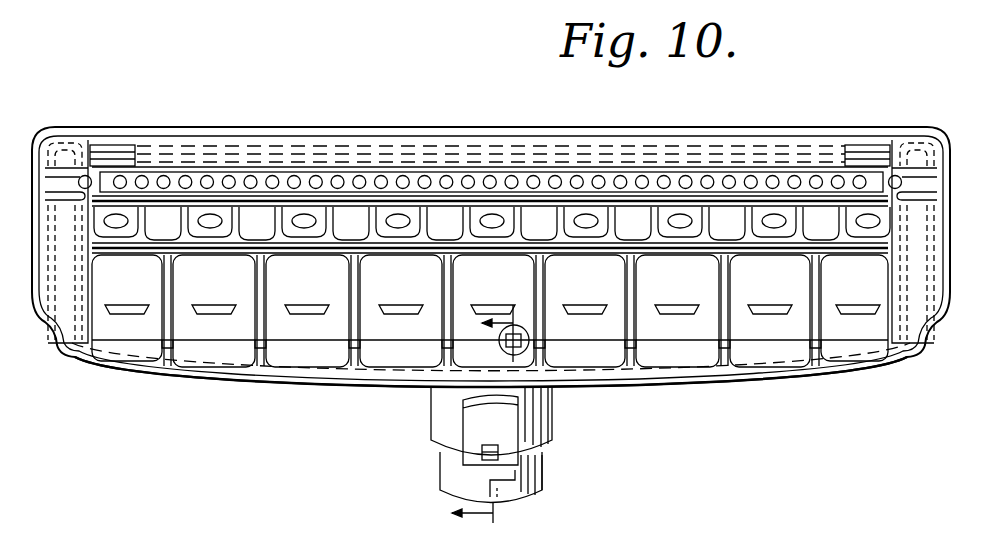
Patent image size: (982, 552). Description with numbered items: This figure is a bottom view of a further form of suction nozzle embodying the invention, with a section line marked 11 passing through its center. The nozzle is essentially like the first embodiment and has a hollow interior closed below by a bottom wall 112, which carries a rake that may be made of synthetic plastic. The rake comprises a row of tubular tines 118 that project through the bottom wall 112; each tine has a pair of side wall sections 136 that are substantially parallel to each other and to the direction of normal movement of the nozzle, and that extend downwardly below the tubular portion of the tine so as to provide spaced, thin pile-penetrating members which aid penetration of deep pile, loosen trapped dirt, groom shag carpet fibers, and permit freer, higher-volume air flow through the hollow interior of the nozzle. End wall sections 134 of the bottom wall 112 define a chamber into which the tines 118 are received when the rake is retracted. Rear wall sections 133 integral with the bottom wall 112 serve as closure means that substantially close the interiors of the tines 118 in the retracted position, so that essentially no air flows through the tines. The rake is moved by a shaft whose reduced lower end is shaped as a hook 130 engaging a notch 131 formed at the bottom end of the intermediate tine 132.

The bottom wall 112 is at (697, 136).
The tubular tines 118 is at (400, 222).
The hook 130 is at (532, 345).
The notch 131 is at (522, 216).
The intermediate tine 132 is at (465, 218).
The rear wall sections 133 is at (245, 326).
The end wall sections 134 is at (93, 323).
The side wall sections 136 is at (650, 222).
The section line 11- 11 is at (460, 418).